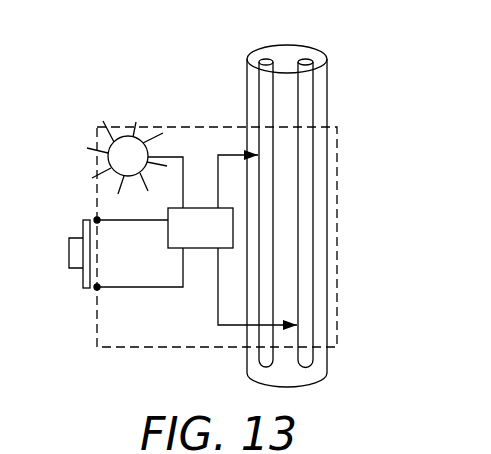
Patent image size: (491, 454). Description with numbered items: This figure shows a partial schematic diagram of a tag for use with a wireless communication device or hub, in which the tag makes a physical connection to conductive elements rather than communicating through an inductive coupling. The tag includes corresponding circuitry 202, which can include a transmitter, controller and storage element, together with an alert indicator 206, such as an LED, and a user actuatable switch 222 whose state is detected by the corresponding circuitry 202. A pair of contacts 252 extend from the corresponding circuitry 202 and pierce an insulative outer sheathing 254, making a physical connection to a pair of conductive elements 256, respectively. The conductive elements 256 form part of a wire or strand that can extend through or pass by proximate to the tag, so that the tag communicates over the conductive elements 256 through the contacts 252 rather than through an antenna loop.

The corresponding circuitry 202 is at (168, 240).
The alert indicator 206 is at (136, 124).
The user actuatable switch 222 is at (69, 254).
The contacts 252 is at (230, 155).
The insulative outer sheathing 254 is at (248, 66).
The conductive elements 256 is at (260, 362).